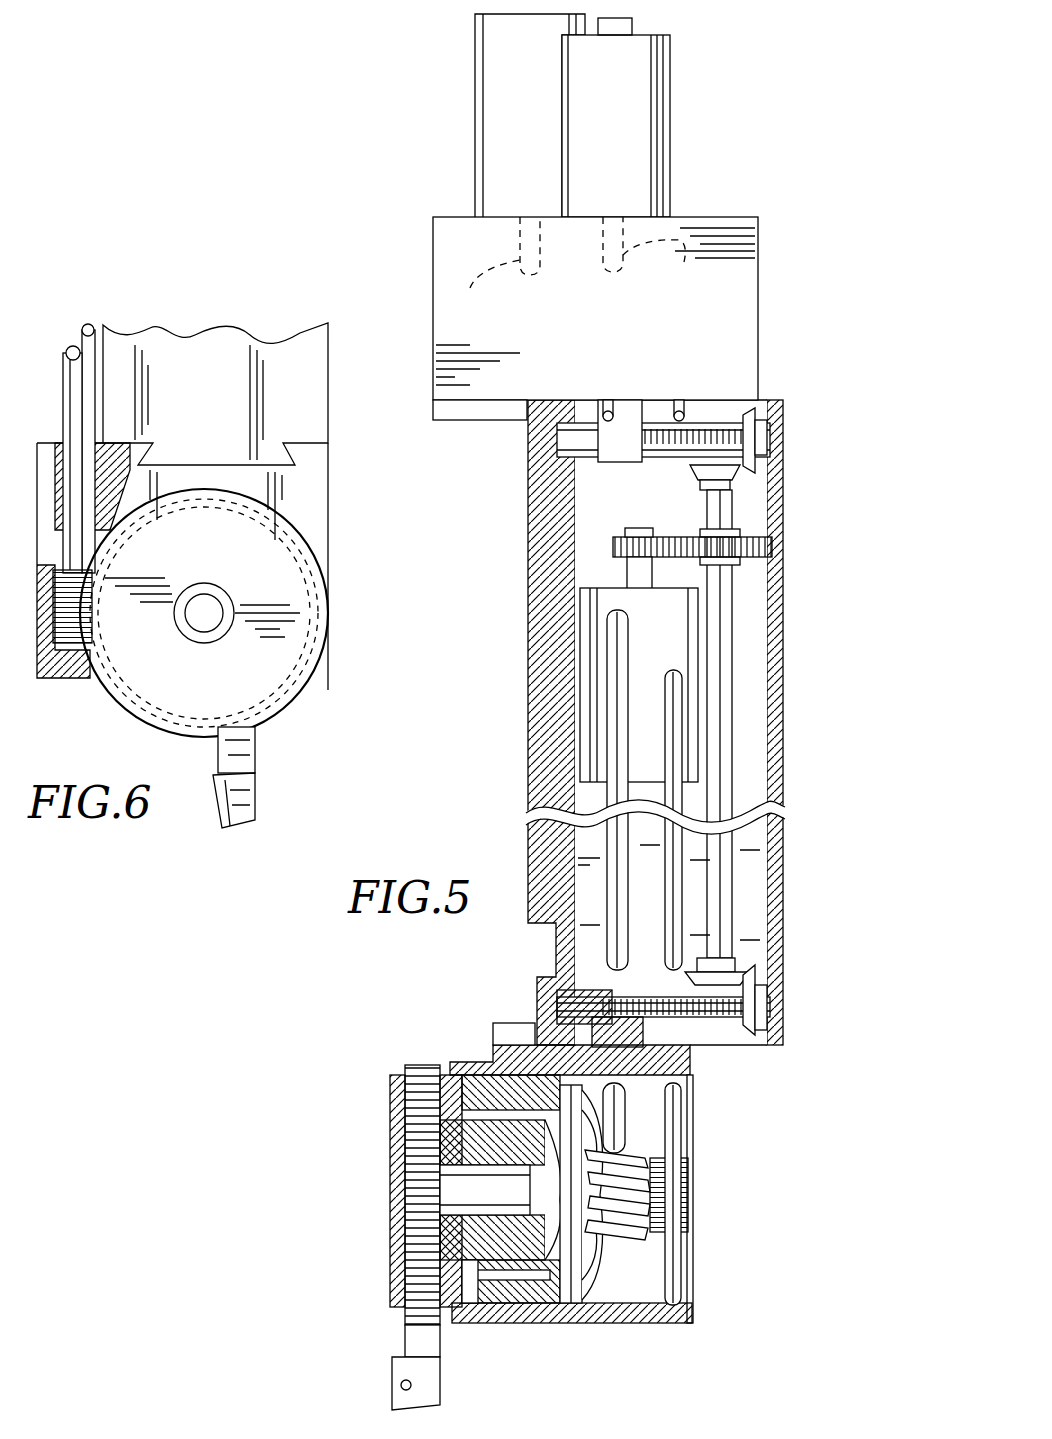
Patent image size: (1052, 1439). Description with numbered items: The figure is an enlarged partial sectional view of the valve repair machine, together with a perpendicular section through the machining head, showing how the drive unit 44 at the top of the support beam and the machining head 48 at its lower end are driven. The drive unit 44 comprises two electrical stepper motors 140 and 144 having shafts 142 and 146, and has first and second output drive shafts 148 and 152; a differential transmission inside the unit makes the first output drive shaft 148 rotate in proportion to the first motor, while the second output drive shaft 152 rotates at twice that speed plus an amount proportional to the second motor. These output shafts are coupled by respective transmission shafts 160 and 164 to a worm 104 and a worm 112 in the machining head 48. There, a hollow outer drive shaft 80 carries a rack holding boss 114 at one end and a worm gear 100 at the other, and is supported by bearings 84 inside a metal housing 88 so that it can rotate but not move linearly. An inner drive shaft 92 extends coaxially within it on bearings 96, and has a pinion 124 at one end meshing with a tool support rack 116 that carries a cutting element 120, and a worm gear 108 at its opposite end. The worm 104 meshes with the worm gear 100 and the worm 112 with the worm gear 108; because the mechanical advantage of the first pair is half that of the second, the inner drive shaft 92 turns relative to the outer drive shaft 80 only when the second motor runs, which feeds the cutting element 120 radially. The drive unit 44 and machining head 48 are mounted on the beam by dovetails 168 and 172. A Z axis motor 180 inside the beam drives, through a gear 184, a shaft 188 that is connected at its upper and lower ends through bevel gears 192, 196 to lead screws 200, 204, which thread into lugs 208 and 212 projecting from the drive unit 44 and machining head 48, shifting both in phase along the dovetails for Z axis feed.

In FIG. 5, the drive unit 44 is at (433, 328).
In FIG. 5, the machining head 48 is at (668, 1320).
In FIG. 5, the hollow outer drive shaft 80 is at (480, 1320).
In FIG. 5, the bearings 84 is at (440, 1070).
In FIG. 5, the metal housing 88 is at (545, 1320).
In FIG. 5, the inner drive shaft 92 is at (430, 1250).
In FIG. 5, the bearings 96 is at (440, 1140).
In FIG. 5, the worm gear 100 is at (568, 1300).
In FIG. 5, the worm 104 is at (648, 1150).
In FIG. 5, the worm gear 108 is at (695, 1300).
In FIG. 6, the worm gear 108 is at (305, 634).
In FIG. 5, the worm 112 is at (690, 1195).
In FIG. 6, the worm 112 is at (72, 682).
In FIG. 5, the rack holding boss 114 is at (392, 1110).
In FIG. 5, the tool support rack 116 is at (420, 1062).
In FIG. 5, the cutting element 120 is at (392, 1392).
In FIG. 5, the pinion 124 is at (430, 1208).
In FIG. 5, the electrical stepper motor 140 is at (476, 77).
In FIG. 5, the shaft 142 is at (497, 270).
In FIG. 5, the electrical stepper motor 144 is at (670, 100).
In FIG. 5, the shaft 146 is at (660, 257).
In FIG. 5, the first output drive shaft 148 is at (605, 402).
In FIG. 5, the second output drive shaft 152 is at (682, 402).
In FIG. 5, the transmission shaft 160 is at (609, 717).
In FIG. 5, the transmission shaft 164 is at (683, 750).
In FIG. 5, the dovetail 168 is at (483, 422).
In FIG. 5, the dovetail 172 is at (510, 1023).
In FIG. 5, the Z axis motor 180 is at (583, 670).
In FIG. 5, the gear 184 is at (613, 540).
In FIG. 5, the shaft 188 is at (735, 655).
In FIG. 5, the bevel gear 192 is at (753, 445).
In FIG. 5, the bevel gear 196 is at (752, 990).
In FIG. 5, the lead screw 200 is at (556, 437).
In FIG. 5, the lead screw 204 is at (560, 1003).
In FIG. 5, the lug 208 is at (600, 463).
In FIG. 5, the lug 212 is at (645, 1028).